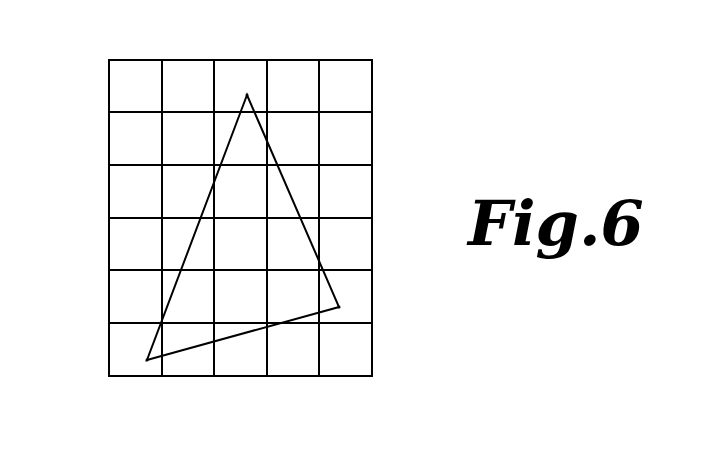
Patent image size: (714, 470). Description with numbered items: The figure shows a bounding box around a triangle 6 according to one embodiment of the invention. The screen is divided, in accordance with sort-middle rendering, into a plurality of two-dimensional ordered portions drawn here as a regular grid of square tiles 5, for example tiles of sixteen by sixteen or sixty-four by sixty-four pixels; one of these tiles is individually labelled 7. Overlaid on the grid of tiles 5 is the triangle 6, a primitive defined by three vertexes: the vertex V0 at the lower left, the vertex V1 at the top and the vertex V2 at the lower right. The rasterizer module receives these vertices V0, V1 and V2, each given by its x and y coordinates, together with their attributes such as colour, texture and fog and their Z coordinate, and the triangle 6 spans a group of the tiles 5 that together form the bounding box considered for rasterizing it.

The square tiles 5 is at (128, 148).
The triangle 6 is at (292, 208).
The pixel 7 is at (373, 93).
The vertex V0 is at (147, 360).
The vertex V1 is at (247, 95).
The vertex V2 is at (339, 307).